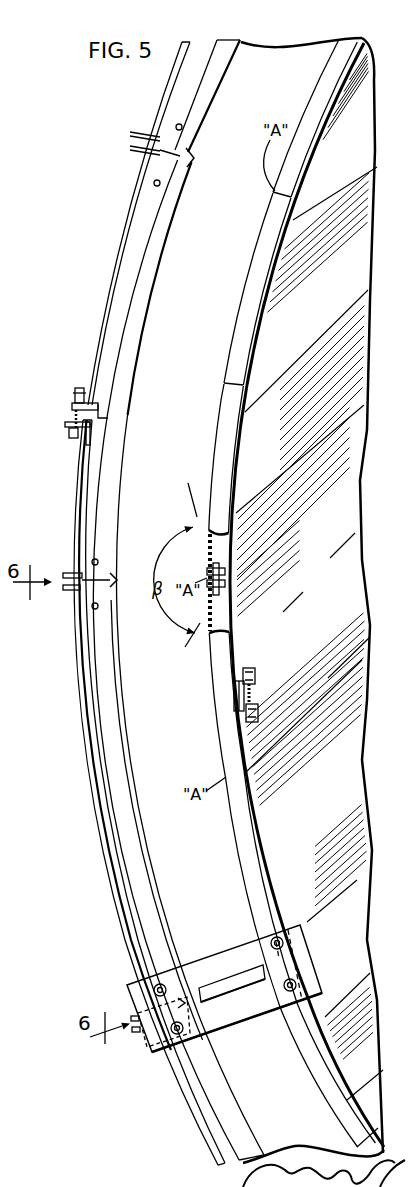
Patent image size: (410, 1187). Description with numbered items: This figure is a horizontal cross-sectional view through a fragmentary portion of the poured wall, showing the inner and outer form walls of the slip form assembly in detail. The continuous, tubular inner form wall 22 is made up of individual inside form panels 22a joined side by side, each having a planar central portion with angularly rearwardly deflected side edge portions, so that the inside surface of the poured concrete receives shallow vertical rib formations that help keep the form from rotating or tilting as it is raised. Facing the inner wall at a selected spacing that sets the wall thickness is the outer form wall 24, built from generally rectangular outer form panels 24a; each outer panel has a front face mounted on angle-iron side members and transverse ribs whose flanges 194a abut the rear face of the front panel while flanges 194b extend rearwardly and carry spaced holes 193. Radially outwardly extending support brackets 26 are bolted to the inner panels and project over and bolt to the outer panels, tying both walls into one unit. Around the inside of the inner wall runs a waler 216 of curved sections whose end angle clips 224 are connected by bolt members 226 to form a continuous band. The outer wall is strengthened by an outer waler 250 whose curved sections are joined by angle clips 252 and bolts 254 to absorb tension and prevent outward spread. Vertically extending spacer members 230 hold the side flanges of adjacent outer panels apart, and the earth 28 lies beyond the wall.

The transverse rib flange 194b is at (218, 55).
The transverse rib flange 194a is at (118, 775).
The holes 193 is at (182, 127).
The spacer member 230 is at (194, 158).
The inside form panel 22a is at (307, 140).
The waler 216 is at (262, 327).
The angle clip 252 is at (72, 400).
The bolt 254 is at (97, 410).
The outer form panel 24a is at (95, 490).
The earth 28 is at (328, 586).
The angle clip 224 is at (255, 675).
The bolt member 226 is at (233, 704).
The outer waler 250 is at (107, 840).
The inner form wall 22 is at (273, 593).
The outer form wall 24 is at (112, 603).
The support bracket 26 is at (152, 1047).